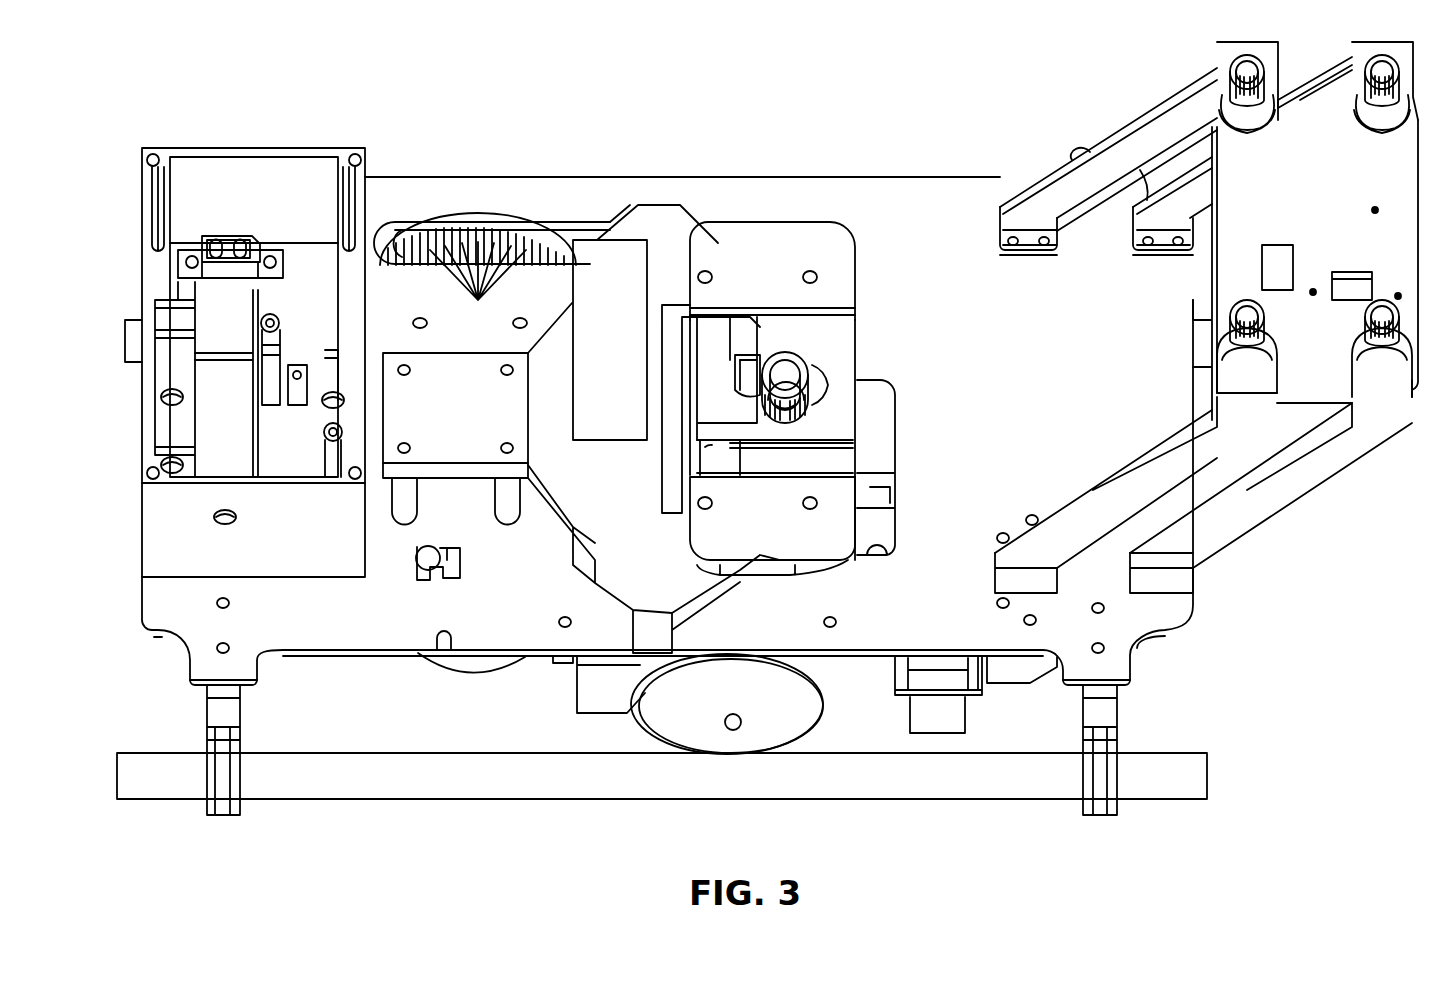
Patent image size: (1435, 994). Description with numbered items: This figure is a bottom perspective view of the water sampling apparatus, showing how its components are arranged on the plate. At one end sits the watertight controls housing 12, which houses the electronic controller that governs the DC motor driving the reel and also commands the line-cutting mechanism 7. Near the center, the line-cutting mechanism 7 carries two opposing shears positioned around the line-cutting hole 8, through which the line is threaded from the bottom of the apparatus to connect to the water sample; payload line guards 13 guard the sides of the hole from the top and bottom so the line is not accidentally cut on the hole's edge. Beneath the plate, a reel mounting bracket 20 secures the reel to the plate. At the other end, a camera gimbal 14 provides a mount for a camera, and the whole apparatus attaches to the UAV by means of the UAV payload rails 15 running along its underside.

The line-cutting mechanism 7 is at (717, 357).
The line-cutting hole 8 is at (828, 385).
The controls housing 12 is at (243, 238).
The payload line guards 13 is at (790, 360).
The camera gimbal 14 is at (1153, 107).
The UAV payload rails 15 is at (1178, 760).
The reel mounting bracket 20 is at (593, 690).